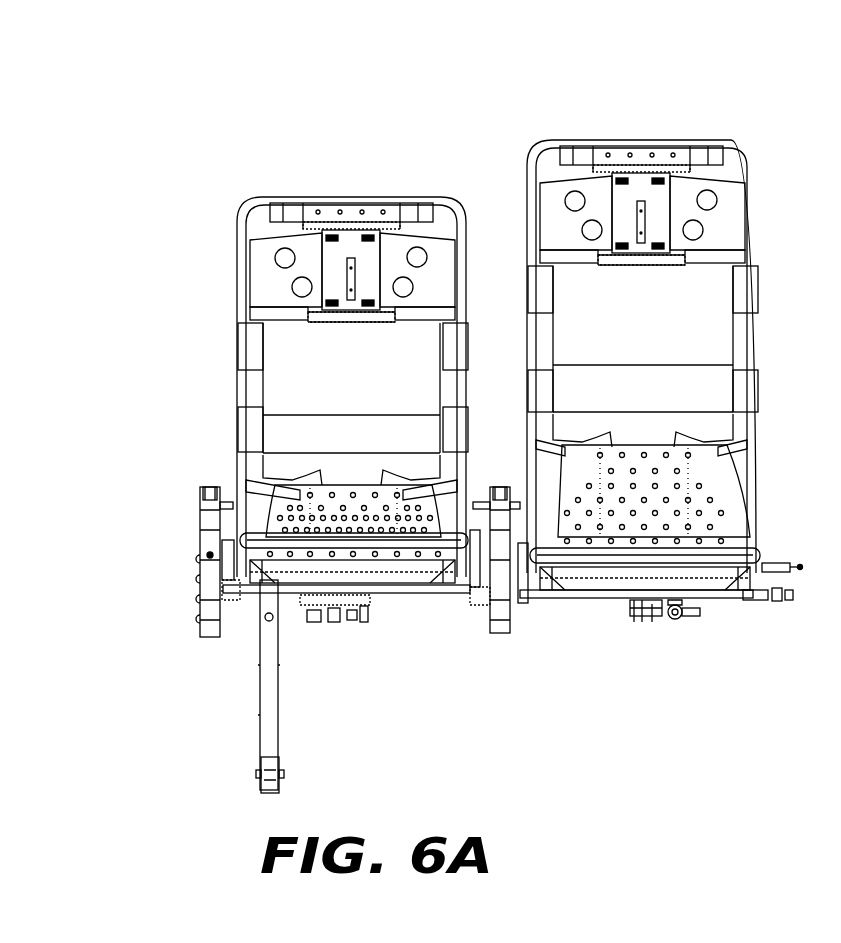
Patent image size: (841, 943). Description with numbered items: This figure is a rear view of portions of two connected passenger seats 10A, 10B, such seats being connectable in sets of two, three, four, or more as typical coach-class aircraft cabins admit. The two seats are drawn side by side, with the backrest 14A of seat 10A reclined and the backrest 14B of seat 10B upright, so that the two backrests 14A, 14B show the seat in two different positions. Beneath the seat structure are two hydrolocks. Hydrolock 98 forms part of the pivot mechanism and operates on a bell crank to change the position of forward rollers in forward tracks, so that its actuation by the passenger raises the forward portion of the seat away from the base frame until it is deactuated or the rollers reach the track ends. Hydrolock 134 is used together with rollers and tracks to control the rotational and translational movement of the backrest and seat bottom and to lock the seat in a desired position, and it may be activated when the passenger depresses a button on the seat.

The seat 10A is at (344, 435).
The seat 10B is at (676, 374).
The backrest 14A is at (238, 318).
The backrest 14B is at (757, 226).
The hydrolock 134 is at (647, 623).
The hydrolock 98 is at (673, 625).